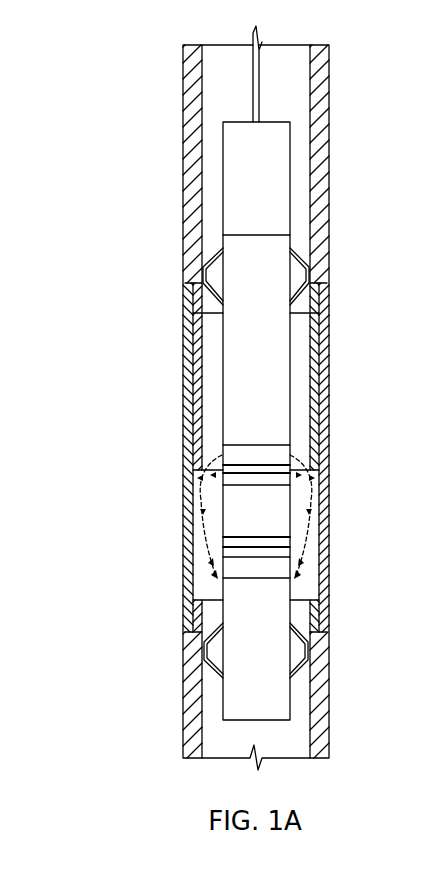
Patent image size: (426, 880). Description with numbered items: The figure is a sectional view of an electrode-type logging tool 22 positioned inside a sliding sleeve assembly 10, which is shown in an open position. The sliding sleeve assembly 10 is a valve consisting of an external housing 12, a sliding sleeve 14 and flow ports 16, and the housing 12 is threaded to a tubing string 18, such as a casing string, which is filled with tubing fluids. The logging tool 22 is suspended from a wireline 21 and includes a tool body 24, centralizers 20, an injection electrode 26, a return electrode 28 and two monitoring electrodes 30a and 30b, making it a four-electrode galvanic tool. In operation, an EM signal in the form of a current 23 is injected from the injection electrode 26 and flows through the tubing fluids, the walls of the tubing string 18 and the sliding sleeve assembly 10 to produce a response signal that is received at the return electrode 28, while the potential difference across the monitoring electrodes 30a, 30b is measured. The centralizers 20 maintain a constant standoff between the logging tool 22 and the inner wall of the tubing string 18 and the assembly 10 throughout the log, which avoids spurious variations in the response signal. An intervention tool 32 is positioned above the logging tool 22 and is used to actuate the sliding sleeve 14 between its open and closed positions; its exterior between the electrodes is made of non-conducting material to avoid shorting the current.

The sliding sleeve assembly 10 is at (108, 272).
The external housing 12 is at (324, 575).
The sliding sleeve 14 is at (316, 365).
The flow ports 16 is at (190, 486).
The tubing string 18 is at (323, 702).
The centralizers 20 is at (213, 250).
The wireline 21 is at (262, 76).
The electrode-type logging tool 22 is at (211, 231).
The current 23 is at (222, 571).
The tool body 24 is at (240, 331).
The injection electrode 26 is at (248, 452).
The return electrode 28 is at (247, 574).
The monitoring electrode 30a is at (228, 498).
The monitoring electrode 30b is at (260, 540).
The intervention tool 32 is at (290, 158).